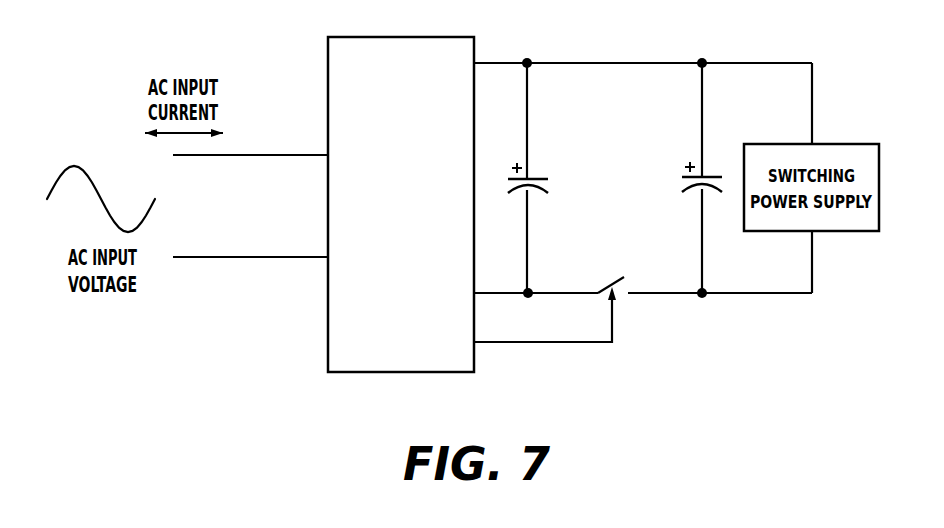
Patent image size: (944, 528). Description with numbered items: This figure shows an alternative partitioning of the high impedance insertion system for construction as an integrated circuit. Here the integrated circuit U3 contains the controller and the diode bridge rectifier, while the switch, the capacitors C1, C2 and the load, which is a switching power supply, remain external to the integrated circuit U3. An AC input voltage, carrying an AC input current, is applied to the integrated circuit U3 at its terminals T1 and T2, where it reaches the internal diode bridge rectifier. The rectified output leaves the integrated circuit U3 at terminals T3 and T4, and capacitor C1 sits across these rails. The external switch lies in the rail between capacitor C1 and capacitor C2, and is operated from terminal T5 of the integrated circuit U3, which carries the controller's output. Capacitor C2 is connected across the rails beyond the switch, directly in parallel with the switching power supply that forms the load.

The integrated circuit U3 is at (401, 204).
The AC input terminal 1 T1 is at (250, 144).
The AC input terminal 2 T2 is at (250, 246).
The DC output terminal (positive) T3 is at (643, 52).
The DC output terminal (return) T4 is at (536, 282).
The switch control terminal T5 is at (545, 314).
The capacitor C1 is at (528, 178).
The capacitor C2 is at (702, 178).